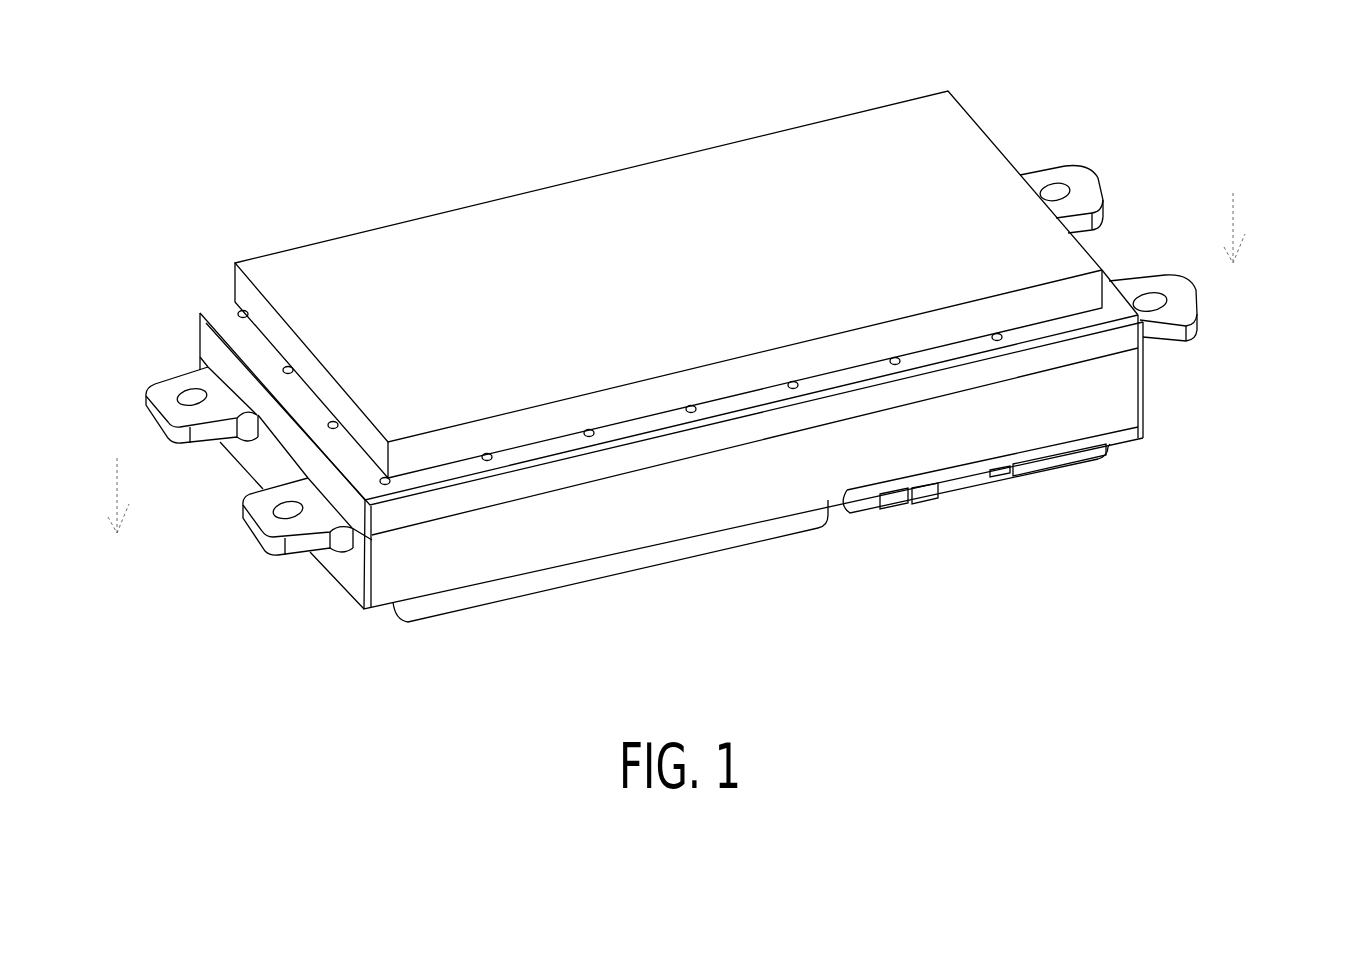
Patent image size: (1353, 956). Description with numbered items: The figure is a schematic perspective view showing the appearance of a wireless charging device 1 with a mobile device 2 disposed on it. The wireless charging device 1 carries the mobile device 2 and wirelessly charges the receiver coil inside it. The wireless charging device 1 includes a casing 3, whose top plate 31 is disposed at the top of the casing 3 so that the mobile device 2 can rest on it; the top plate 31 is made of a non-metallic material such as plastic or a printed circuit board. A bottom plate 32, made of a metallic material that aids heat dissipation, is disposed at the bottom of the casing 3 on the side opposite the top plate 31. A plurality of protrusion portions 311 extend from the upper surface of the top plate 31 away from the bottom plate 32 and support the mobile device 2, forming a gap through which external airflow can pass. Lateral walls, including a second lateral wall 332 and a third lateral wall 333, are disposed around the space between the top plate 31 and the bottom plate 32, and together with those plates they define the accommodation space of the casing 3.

The wireless charging device 1 is at (703, 384).
The mobile device 2 is at (567, 203).
The casing 3 is at (655, 422).
The top plate 31 is at (1117, 307).
The bottom plate 32 is at (568, 572).
The protrusion portions 311 is at (1120, 312).
The second lateral wall 332 is at (352, 575).
The third lateral wall 333 is at (738, 495).